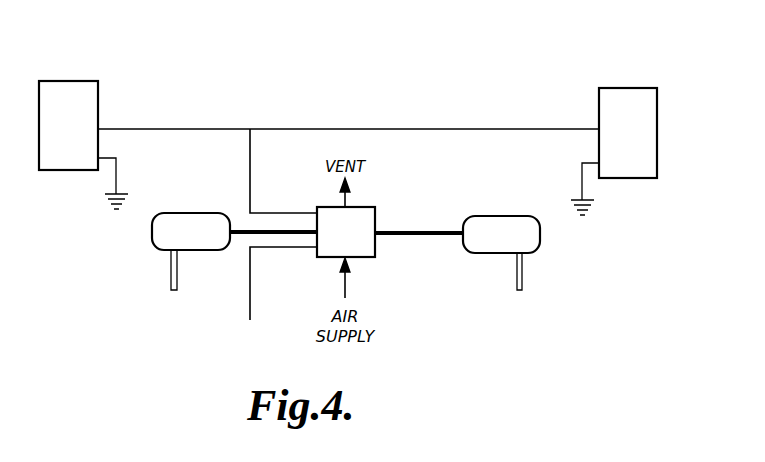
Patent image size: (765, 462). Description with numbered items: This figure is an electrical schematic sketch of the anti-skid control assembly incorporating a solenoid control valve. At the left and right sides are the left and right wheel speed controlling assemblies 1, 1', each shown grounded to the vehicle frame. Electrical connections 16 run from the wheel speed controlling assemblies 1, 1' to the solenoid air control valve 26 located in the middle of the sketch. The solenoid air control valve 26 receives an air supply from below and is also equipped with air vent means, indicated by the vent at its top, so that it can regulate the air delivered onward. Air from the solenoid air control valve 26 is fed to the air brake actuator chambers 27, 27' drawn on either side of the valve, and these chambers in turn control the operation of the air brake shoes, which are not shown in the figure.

The wheel speed controlling assembly 1 is at (83, 125).
The wheel speed controlling assembly 1' is at (617, 130).
The electrical connections 16 is at (329, 128).
The solenoid air control valve 26 is at (377, 208).
The air brake actuator chamber 27 is at (234, 233).
The air brake actuator chamber 27' is at (457, 234).